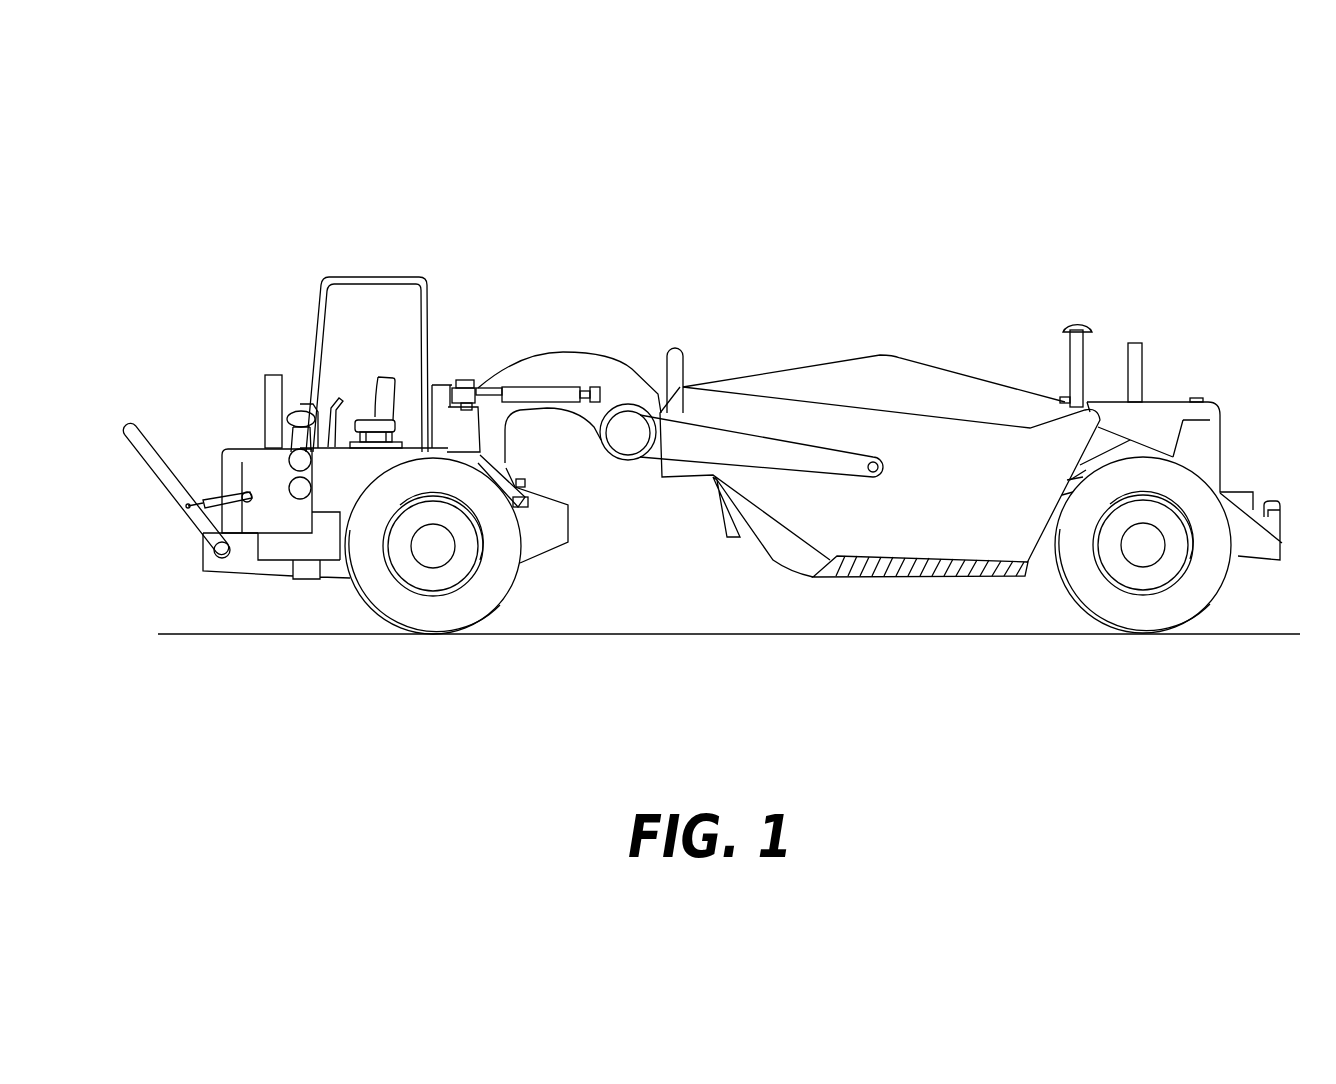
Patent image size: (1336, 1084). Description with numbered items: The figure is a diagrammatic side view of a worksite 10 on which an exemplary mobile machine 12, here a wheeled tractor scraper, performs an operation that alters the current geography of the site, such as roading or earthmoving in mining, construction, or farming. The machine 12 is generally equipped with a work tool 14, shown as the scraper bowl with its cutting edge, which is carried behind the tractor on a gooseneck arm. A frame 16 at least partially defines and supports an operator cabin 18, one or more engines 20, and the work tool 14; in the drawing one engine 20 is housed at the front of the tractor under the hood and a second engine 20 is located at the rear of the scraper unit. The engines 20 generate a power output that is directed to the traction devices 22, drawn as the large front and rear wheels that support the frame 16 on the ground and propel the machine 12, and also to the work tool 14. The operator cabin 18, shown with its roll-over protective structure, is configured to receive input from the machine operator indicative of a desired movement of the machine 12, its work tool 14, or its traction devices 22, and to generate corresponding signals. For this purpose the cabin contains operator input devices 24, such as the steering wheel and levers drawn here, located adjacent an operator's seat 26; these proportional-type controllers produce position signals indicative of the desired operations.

The worksite 10 is at (118, 603).
The mobile machine 12 is at (985, 307).
The work tool 14 is at (968, 497).
The frame 16 is at (566, 527).
The operator cabin 18 is at (371, 272).
The engines 20 is at (285, 522).
The traction devices 22 is at (498, 589).
The operator input devices 24 is at (325, 392).
The operator's seat 26 is at (384, 377).